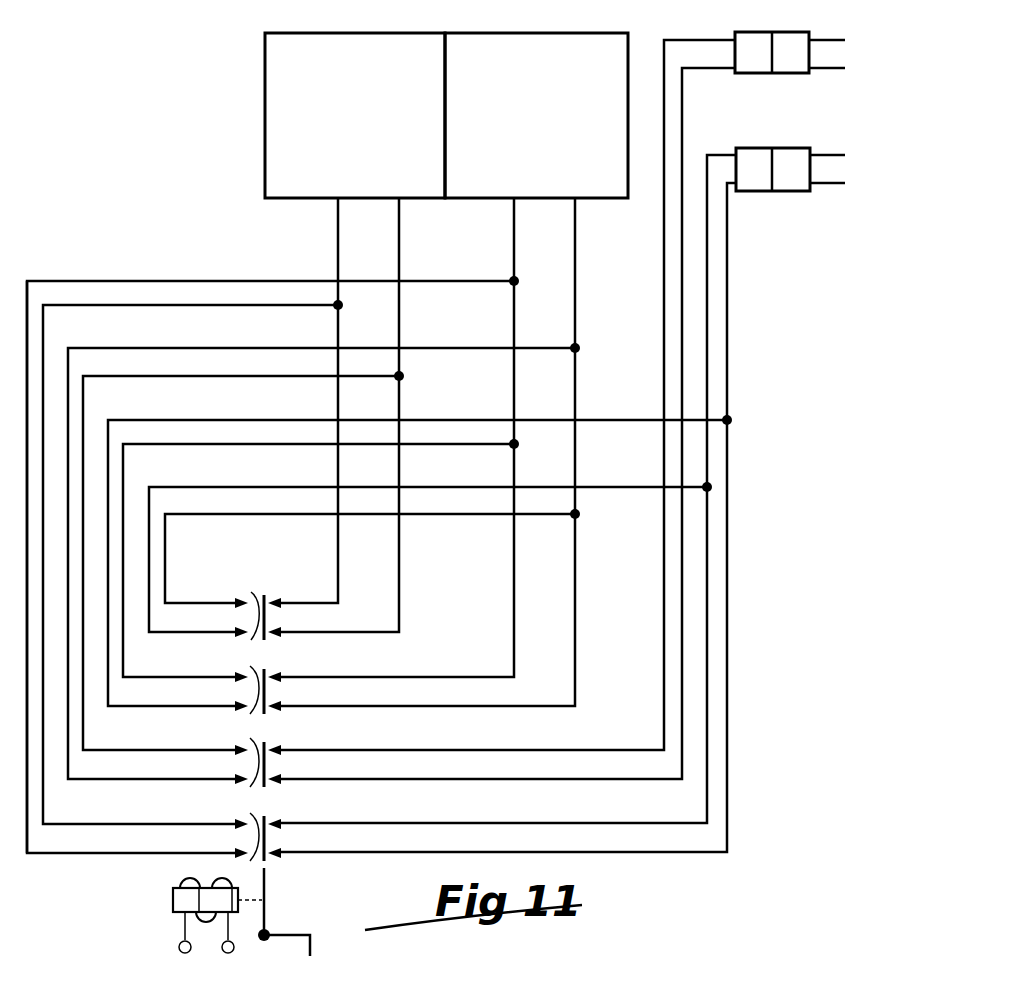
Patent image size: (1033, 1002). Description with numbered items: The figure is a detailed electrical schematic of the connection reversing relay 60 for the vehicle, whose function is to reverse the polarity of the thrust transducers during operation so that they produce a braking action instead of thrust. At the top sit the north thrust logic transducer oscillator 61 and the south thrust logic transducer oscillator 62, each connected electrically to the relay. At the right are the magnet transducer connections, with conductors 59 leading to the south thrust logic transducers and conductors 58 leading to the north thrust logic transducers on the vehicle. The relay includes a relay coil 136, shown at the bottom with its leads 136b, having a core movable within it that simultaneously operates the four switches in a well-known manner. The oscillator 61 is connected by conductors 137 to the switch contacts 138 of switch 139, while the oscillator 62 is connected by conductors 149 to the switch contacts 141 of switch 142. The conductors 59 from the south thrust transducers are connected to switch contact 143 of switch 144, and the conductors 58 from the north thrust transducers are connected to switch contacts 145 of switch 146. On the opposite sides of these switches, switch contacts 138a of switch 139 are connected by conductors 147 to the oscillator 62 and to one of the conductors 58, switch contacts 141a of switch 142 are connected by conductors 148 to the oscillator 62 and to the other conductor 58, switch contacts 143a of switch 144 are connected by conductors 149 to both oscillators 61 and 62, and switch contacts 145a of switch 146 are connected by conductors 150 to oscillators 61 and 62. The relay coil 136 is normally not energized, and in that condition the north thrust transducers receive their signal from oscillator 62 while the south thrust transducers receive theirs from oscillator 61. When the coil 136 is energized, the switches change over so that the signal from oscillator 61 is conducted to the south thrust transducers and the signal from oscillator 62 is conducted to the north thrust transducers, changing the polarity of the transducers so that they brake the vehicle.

The conductors 58 is at (707, 215).
The conductors 59 is at (710, 40).
The connection reversing relay 60 is at (105, 262).
The north thrust logic transducer oscillator 61 is at (265, 93).
The south thrust logic transducer oscillator 62 is at (549, 33).
The relay coil 136 is at (150, 893).
The solenoid leads 136b is at (173, 906).
The conductors 137 is at (398, 234).
The switch contacts 138 is at (272, 629).
The switch contacts 138a is at (216, 603).
The switch 139 is at (251, 592).
The switch contacts 141 is at (272, 703).
The switch contacts 141a is at (258, 679).
The switch 142 is at (256, 714).
The switch contact 143 is at (272, 776).
The switch contacts 143a is at (250, 738).
The switch 144 is at (256, 787).
The switch contacts 145 is at (272, 850).
The switch contacts 145a is at (216, 825).
The switch 146 is at (250, 813).
The conductors 147 is at (265, 489).
The conductors 148 is at (176, 678).
The conductors 149 is at (574, 231).
The conductors 150 is at (106, 825).